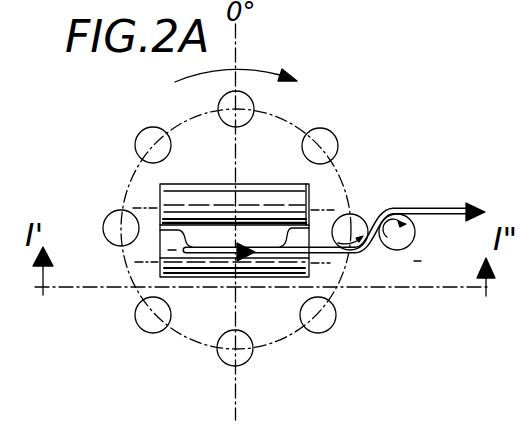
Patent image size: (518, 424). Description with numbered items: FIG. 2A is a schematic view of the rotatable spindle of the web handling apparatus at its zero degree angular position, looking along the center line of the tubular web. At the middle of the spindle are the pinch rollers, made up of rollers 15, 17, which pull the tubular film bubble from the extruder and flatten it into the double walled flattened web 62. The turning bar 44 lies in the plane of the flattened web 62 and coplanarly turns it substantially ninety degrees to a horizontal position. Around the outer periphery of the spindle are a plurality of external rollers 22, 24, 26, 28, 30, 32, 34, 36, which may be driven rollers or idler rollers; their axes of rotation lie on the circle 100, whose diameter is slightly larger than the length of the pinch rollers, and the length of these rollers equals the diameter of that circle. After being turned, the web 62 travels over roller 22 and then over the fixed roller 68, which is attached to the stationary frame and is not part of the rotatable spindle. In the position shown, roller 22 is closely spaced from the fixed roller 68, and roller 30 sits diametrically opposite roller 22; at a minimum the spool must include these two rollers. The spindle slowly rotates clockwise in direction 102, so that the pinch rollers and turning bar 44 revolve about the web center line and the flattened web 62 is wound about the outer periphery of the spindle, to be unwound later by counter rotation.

The pinch roller 15 is at (211, 184).
The pinch roller 17 is at (184, 277).
The roller 22 is at (358, 213).
The roller 24 is at (336, 313).
The roller 26 is at (242, 366).
The roller 28 is at (140, 328).
The roller 30 is at (103, 230).
The roller 32 is at (135, 147).
The roller 34 is at (254, 98).
The roller 36 is at (339, 143).
The turning bar 44 is at (165, 236).
The flattened web 62 is at (268, 249).
The fixed roller 68 is at (415, 236).
The circle 100 is at (300, 127).
The direction of rotation 102 is at (248, 59).